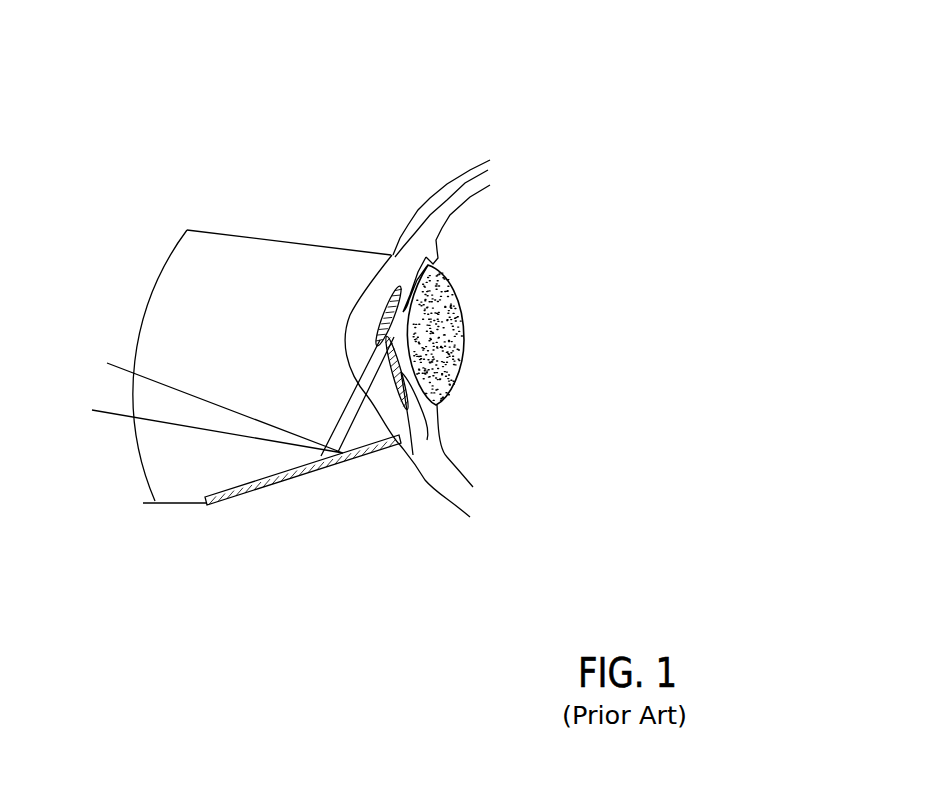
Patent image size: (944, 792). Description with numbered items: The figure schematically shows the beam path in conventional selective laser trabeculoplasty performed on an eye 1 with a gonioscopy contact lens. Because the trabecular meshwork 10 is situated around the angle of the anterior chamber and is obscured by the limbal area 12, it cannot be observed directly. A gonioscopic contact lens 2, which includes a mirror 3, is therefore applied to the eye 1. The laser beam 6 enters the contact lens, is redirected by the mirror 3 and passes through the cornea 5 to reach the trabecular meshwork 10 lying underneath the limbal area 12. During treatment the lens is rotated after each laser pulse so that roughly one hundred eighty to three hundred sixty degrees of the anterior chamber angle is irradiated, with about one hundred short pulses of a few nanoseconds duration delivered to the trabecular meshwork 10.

The eye 1 is at (465, 152).
The gonioscopic contact lens 2 is at (187, 230).
The mirror 3 is at (210, 503).
The cornea 5 is at (356, 337).
The laser beam 6 is at (115, 391).
The trabecular meshwork 10 is at (399, 287).
The limbal area 12 is at (386, 289).